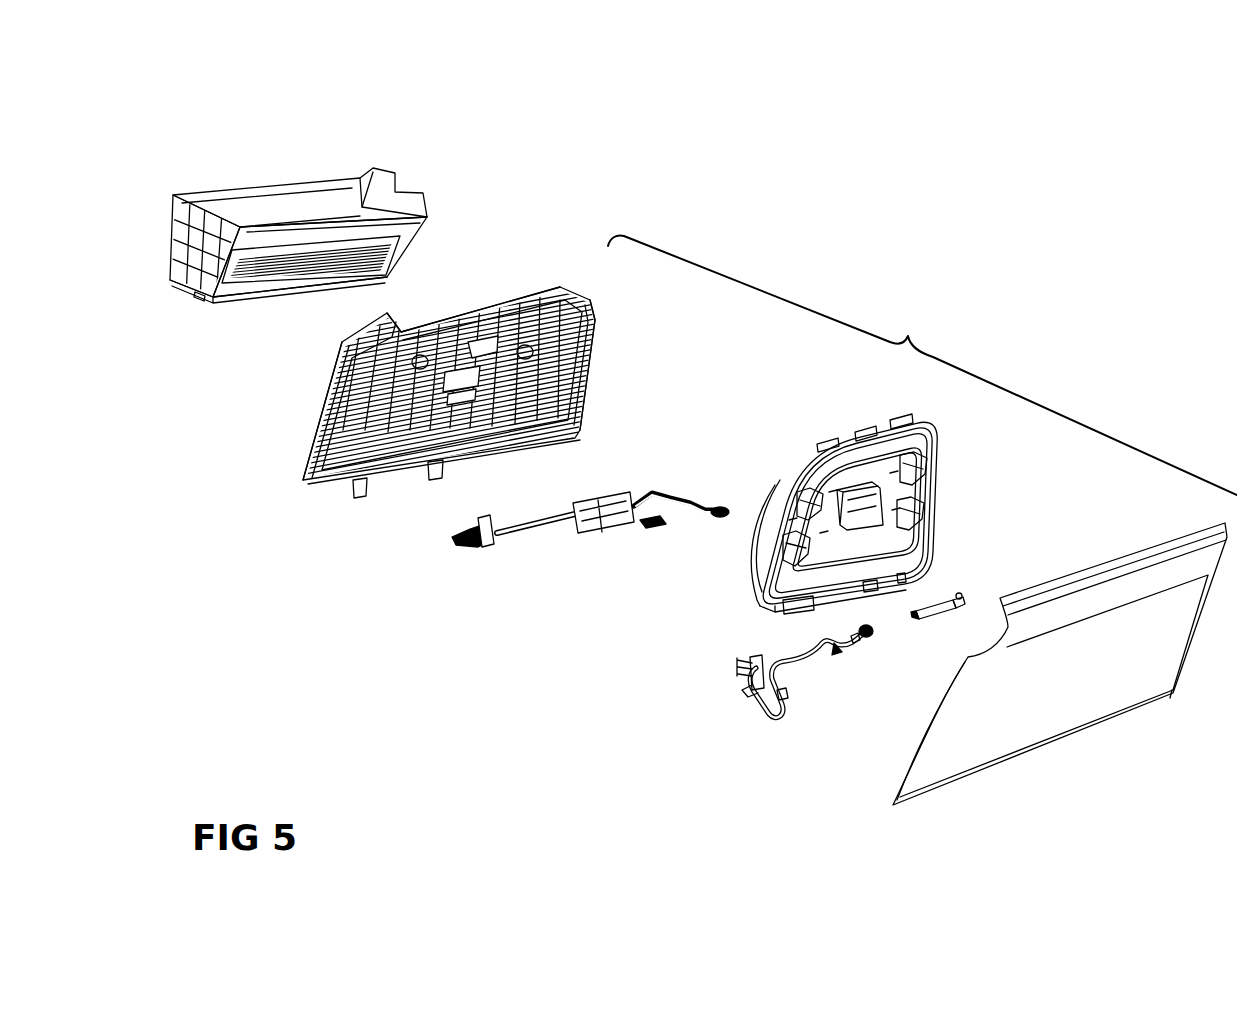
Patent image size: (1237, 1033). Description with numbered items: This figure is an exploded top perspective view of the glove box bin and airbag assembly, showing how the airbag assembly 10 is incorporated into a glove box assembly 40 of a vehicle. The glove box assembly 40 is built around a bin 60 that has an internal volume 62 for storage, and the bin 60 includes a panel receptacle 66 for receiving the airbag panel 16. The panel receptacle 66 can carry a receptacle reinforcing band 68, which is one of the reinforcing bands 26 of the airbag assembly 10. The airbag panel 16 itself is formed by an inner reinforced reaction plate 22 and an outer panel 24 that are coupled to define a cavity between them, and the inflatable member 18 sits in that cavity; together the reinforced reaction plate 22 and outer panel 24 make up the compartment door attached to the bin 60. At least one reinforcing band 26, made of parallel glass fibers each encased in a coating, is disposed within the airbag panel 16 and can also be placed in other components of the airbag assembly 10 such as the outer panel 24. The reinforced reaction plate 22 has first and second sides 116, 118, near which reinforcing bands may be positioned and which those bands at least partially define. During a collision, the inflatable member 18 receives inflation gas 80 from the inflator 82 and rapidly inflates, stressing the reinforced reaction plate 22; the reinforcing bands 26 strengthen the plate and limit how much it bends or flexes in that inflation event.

The airbag assembly 10 is at (836, 234).
The airbag panel 16 is at (922, 365).
The inflatable member 18 is at (742, 565).
The reinforced reaction plate 22 is at (327, 457).
The outer panel 24 is at (1103, 690).
The reinforcing band 26 is at (498, 305).
The glove box assembly 40 is at (292, 156).
The bin 60 is at (221, 200).
The internal volume 62 is at (312, 221).
The panel receptacle 66 is at (237, 301).
The receptacle reinforcing band 68 is at (287, 300).
The inflation gas 80 is at (937, 582).
The inflator 82 is at (948, 627).
The first side 116 is at (335, 370).
The second side 118 is at (585, 360).